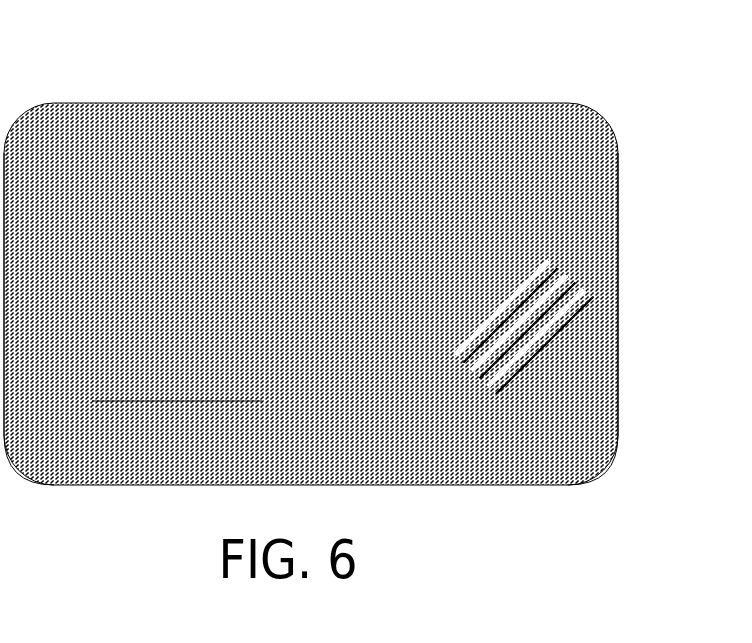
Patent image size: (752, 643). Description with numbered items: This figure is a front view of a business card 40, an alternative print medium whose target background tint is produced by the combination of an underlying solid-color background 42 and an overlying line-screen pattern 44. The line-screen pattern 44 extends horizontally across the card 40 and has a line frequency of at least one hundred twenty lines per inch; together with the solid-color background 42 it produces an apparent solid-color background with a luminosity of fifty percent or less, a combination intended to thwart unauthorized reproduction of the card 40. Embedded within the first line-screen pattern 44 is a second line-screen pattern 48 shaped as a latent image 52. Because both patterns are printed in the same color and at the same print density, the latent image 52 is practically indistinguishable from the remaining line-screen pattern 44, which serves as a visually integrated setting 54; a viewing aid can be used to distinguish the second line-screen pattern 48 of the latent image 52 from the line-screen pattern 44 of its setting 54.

The business card 40 is at (490, 98).
The solid-color background 42 is at (64, 136).
The line-screen pattern 44 is at (35, 477).
The second line-screen pattern 48 is at (617, 398).
The latent image 52 is at (576, 290).
The visually integrated setting 54 is at (320, 135).